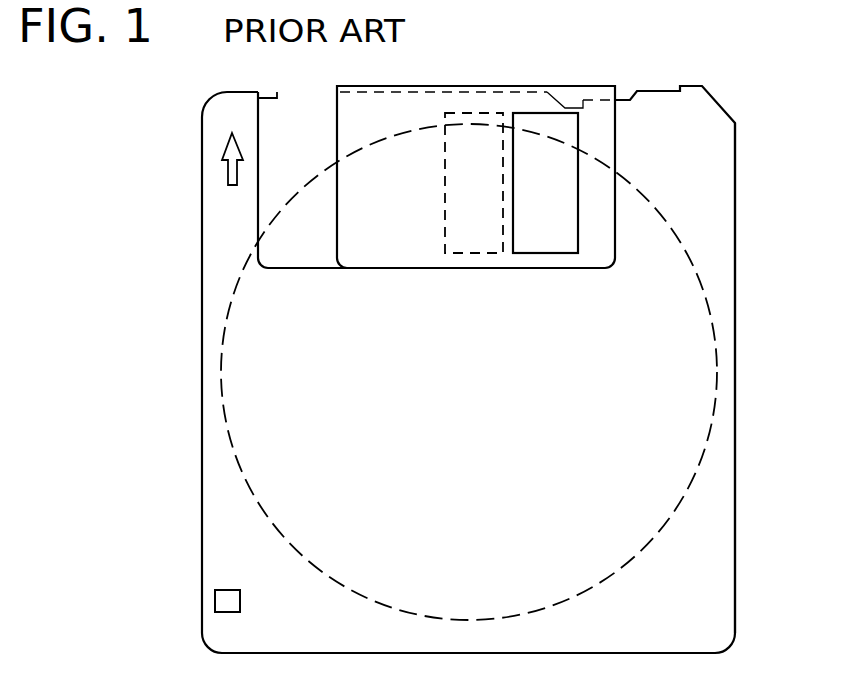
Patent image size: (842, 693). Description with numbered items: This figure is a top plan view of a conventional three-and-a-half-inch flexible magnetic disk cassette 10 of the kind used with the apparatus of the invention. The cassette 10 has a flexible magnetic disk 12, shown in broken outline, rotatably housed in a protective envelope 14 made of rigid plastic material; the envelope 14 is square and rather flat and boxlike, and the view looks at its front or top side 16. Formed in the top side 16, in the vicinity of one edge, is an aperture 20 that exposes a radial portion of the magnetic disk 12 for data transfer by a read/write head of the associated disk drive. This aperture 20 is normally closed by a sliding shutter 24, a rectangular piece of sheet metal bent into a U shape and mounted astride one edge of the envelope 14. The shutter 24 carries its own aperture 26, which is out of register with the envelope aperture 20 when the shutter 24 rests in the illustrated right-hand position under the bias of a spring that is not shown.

The disk cassette 10 is at (740, 142).
The flexible magnetic disk 12 is at (718, 370).
The protective envelope 14 is at (737, 225).
The top side 16 is at (725, 510).
The aperture 20 is at (477, 252).
The sliding shutter 24 is at (400, 103).
The shutter aperture 26 is at (548, 252).